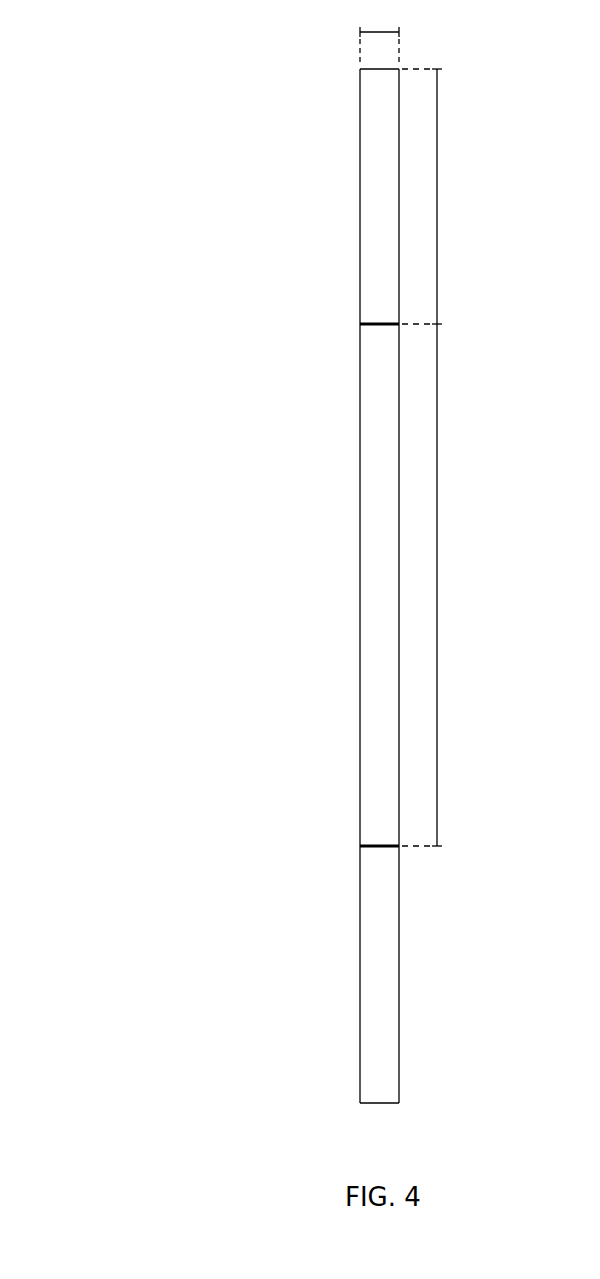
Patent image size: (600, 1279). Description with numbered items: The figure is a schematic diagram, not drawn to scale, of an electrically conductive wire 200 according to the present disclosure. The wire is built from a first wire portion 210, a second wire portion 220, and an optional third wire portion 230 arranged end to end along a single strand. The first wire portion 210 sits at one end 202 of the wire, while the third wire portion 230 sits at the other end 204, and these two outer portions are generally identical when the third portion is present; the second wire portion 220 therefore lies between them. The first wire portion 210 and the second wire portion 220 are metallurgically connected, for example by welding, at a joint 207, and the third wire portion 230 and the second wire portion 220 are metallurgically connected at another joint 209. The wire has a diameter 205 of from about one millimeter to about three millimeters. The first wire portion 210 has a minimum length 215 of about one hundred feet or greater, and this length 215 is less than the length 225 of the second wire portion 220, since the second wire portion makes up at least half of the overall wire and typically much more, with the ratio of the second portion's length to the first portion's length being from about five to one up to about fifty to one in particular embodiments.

The electrically conductive wire 200 is at (106, 85).
The one end 202 is at (359, 97).
The other end 204 is at (359, 1089).
The diameter 205 is at (407, 41).
The joint 207 is at (359, 324).
The another joint 209 is at (359, 847).
The first wire portion 210 is at (359, 173).
The minimum length 215 is at (447, 196).
The second wire portion 220 is at (359, 465).
The length 225 is at (449, 585).
The third wire portion 230 is at (359, 1010).